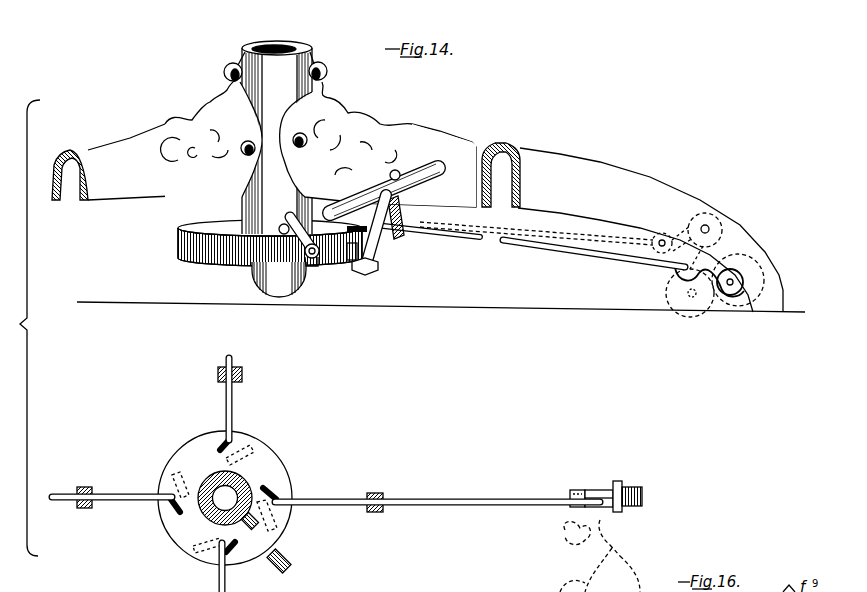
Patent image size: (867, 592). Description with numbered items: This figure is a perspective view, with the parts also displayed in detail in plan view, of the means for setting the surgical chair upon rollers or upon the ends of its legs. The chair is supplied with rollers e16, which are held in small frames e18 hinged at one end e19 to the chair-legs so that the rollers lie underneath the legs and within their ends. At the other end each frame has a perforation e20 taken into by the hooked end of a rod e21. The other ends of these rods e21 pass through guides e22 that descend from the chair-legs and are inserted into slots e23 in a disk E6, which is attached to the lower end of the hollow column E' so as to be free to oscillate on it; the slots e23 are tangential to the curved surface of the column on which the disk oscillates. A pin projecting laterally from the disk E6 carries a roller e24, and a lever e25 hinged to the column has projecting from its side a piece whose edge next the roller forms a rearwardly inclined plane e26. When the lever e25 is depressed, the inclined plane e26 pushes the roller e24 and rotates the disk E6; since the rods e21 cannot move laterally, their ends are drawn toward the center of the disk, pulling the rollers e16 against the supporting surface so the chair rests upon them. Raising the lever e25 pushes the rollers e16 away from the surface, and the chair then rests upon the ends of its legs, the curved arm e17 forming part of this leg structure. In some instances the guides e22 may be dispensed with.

The standard post E' is at (277, 126).
The disk E6 is at (222, 254).
The rollers e16 is at (733, 292).
The curved arm e17 is at (778, 290).
The small frames e18 is at (718, 238).
The hinged end e19 is at (704, 222).
The perforation e20 is at (678, 268).
The rods e21 is at (233, 412).
The guides e22 is at (388, 236).
The slots e23 is at (356, 226).
The roller e24 is at (288, 554).
The lever e25 is at (431, 170).
The inclined plane e26 is at (323, 276).